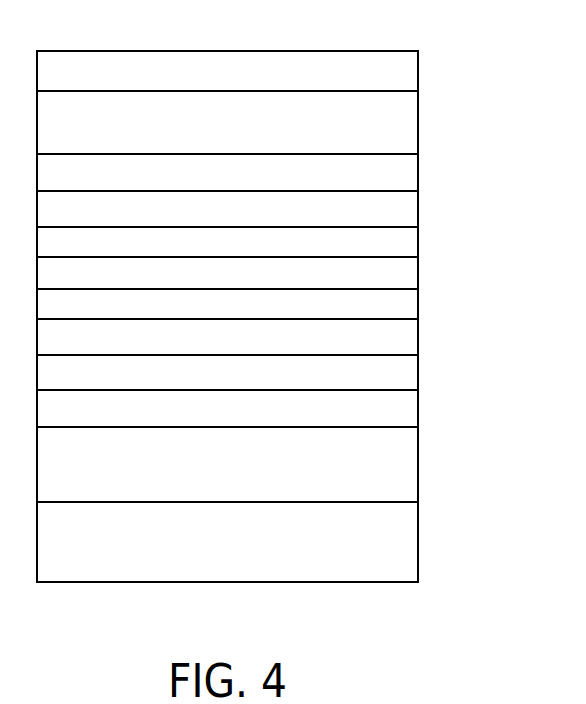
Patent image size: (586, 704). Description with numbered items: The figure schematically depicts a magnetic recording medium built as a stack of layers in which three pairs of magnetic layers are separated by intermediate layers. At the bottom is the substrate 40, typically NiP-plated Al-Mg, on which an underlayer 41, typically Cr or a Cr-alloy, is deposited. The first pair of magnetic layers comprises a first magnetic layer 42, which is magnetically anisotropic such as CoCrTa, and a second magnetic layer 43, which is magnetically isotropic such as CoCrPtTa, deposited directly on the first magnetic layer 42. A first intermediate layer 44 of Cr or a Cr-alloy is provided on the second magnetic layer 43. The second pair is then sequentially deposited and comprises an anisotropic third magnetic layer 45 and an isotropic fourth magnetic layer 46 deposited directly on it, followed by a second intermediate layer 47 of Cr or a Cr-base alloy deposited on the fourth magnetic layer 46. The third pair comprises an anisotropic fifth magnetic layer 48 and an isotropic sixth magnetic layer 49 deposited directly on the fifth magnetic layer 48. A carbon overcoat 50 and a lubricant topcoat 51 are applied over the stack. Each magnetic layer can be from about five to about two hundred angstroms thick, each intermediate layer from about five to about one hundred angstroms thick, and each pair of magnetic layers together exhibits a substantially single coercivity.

The substrate 40 is at (413, 535).
The underlayer 41 is at (413, 460).
The first magnetic layer 42 is at (413, 410).
The second magnetic layer 43 is at (413, 365).
The first intermediate layer 44 is at (413, 330).
The third magnetic layer 45 is at (413, 295).
The fourth magnetic layer 46 is at (413, 268).
The second intermediate layer 47 is at (413, 232).
The fifth magnetic layer 48 is at (413, 195).
The sixth magnetic layer 49 is at (413, 163).
The carbon overcoat 50 is at (413, 118).
The lubricant topcoat 51 is at (413, 70).